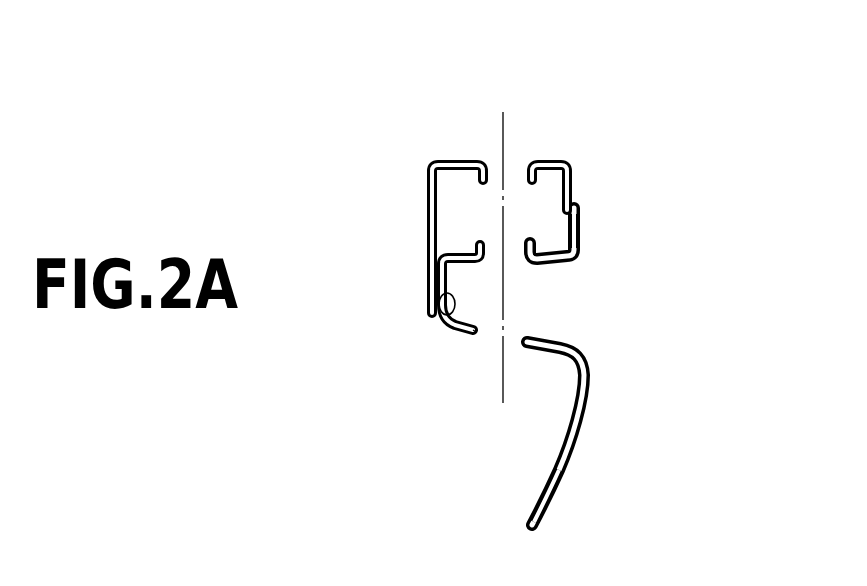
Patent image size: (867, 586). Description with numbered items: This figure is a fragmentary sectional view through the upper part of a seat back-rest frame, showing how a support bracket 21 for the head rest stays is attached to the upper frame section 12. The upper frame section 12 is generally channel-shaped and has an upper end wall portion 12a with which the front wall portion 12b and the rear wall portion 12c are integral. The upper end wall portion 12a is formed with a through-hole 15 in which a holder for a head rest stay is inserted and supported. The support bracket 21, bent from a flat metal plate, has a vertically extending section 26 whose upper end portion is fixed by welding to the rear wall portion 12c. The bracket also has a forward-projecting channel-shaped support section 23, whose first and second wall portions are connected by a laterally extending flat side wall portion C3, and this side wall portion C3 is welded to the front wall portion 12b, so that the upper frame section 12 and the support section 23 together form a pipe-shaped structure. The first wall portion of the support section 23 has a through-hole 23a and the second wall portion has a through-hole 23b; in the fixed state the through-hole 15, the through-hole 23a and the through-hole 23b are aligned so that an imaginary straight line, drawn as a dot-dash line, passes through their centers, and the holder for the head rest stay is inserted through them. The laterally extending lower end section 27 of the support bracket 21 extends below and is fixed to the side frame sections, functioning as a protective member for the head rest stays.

The upper frame section 12 is at (547, 163).
The upper end wall portion 12a is at (460, 160).
The front wall portion 12b is at (426, 222).
The rear wall portion 12c is at (574, 190).
The through-hole 15 is at (513, 165).
The support bracket 21 is at (589, 383).
The channel-shaped support section 23 is at (457, 330).
The through-hole 23a is at (526, 266).
The through-hole 23b is at (491, 338).
The vertically extending section 26 is at (580, 237).
The lower end section 27 is at (568, 468).
The side wall portion C3 is at (445, 330).